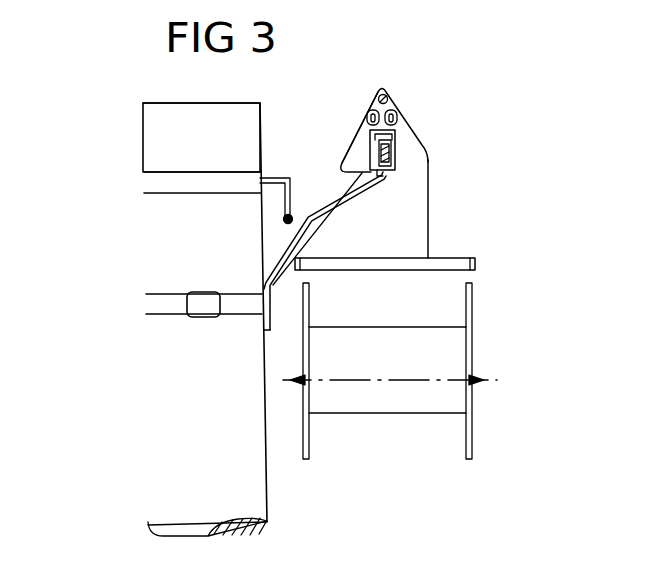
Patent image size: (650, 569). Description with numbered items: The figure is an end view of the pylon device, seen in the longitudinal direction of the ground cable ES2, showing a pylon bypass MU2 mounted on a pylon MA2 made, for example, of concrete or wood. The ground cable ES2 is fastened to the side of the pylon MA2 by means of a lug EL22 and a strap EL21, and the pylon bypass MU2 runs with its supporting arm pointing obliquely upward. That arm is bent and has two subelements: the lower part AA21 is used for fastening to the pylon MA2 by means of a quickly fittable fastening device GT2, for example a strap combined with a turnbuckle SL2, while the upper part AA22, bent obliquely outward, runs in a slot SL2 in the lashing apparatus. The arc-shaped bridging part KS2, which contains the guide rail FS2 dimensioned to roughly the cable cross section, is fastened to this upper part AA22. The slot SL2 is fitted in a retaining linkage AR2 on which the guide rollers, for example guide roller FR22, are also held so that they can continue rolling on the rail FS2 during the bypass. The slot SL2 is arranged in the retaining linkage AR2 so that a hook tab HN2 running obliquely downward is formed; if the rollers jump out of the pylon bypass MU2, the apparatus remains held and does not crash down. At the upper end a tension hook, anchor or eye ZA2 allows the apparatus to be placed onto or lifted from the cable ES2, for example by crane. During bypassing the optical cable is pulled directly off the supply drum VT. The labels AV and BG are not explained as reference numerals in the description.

The pylon MA2 is at (157, 502).
The lug EL22 is at (262, 137).
The strap EL21 is at (150, 180).
The fastening device GT2 is at (150, 305).
The slot SL2 is at (202, 314).
The ground cable ES2 is at (283, 219).
The upper arm part AA22 is at (288, 248).
The lower arm part AA21 is at (272, 286).
The bridging part KS2 is at (318, 217).
The guide roller FR22 is at (405, 125).
The hook tab HN2 is at (350, 152).
The tension eye ZA2 is at (387, 97).
The direction of advance AV is at (425, 144).
The guide rail FS2 is at (385, 173).
The retaining linkage AR2 is at (412, 220).
The base BG is at (476, 292).
The pylon bypass MU2 is at (318, 221).
The supply drum VT is at (475, 432).